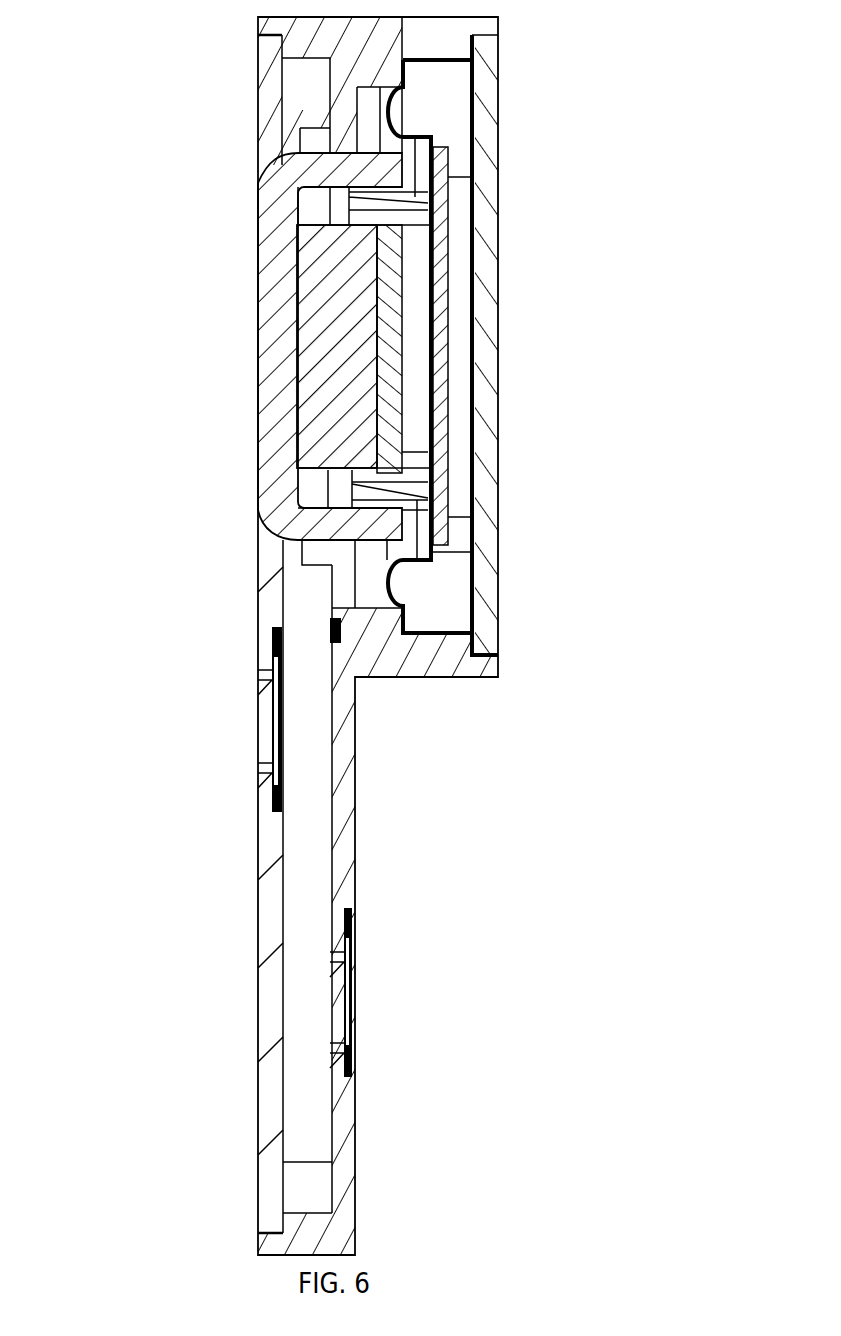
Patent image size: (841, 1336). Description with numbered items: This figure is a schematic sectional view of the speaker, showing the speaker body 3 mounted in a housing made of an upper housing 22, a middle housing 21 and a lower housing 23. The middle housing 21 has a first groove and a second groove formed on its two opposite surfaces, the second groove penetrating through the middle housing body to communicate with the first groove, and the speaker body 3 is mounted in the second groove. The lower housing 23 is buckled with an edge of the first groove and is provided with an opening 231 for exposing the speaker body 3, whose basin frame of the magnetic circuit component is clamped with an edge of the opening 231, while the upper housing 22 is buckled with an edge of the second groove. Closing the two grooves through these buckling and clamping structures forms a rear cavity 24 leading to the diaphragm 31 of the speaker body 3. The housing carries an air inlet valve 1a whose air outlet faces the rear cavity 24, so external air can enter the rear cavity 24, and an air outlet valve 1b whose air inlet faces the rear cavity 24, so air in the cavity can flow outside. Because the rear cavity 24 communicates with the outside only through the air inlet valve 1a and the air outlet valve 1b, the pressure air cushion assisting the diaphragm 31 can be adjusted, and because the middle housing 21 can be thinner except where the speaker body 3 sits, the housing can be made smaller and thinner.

The air inlet valve 1a is at (277, 710).
The air outlet valve 1b is at (350, 990).
The speaker body 3 is at (330, 335).
The middle housing 21 is at (363, 652).
The upper housing 22 is at (483, 340).
The lower housing 23 is at (268, 905).
The rear cavity 24 is at (300, 826).
The diaphragm 31 is at (443, 552).
The opening 231 is at (268, 165).